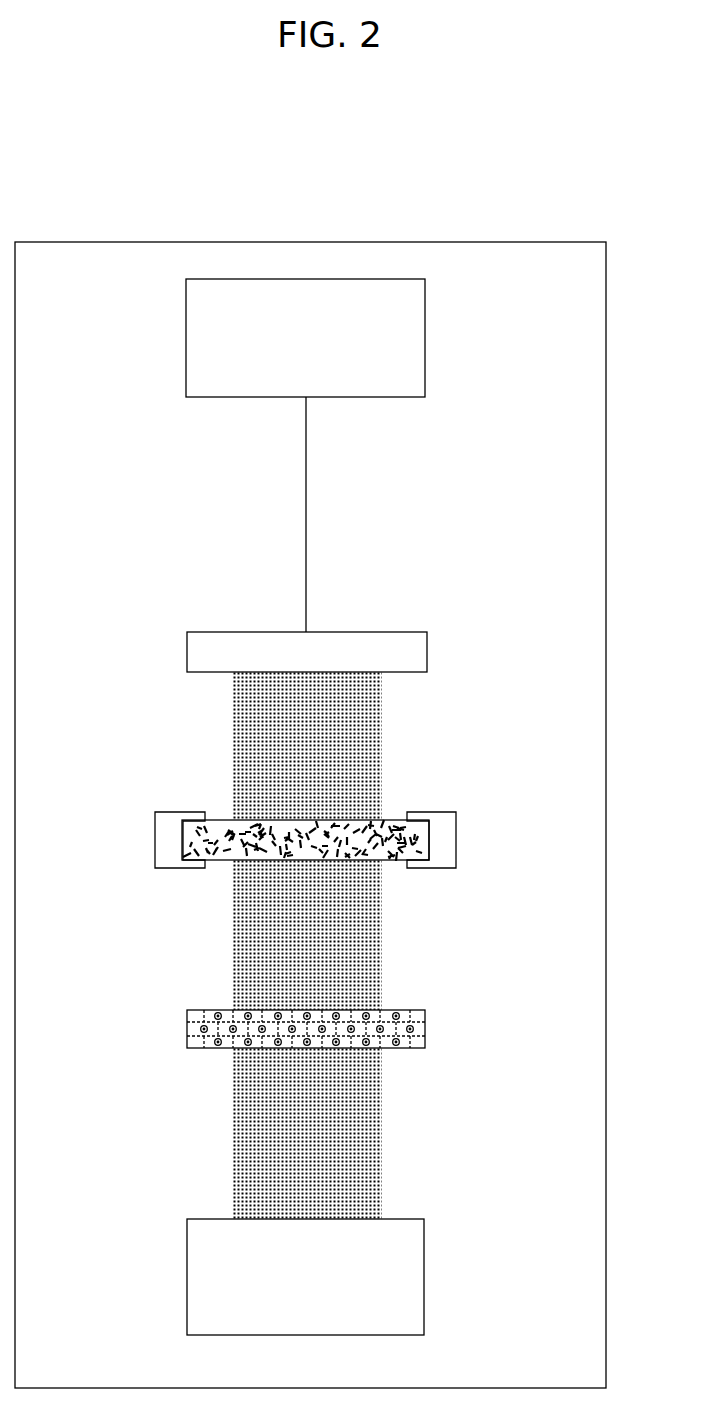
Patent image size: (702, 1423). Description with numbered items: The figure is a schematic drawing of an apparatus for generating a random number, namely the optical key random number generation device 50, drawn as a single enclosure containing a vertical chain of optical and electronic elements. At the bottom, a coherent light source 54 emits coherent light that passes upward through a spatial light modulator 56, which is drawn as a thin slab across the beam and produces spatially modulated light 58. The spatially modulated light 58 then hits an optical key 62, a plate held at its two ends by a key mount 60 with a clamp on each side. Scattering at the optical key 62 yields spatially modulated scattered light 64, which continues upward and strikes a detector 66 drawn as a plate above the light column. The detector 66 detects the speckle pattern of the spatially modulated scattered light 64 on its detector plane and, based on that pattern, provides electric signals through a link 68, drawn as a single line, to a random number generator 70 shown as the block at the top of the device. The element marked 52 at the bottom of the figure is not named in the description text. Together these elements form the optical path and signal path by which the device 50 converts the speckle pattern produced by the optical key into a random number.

The optical key random number generation device 50 is at (322, 242).
The cathode current collector 52 is at (424, 1270).
The coherent light source 54 is at (313, 1128).
The spatial light modulator 56 is at (426, 1027).
The spatially modulated light 58 is at (307, 940).
The key mount 60 is at (153, 836).
The optical key 62 is at (300, 818).
The spatially modulated scattered light 64 is at (312, 719).
The detector 66 is at (429, 648).
The link 68 is at (307, 505).
The random number generator 70 is at (427, 335).